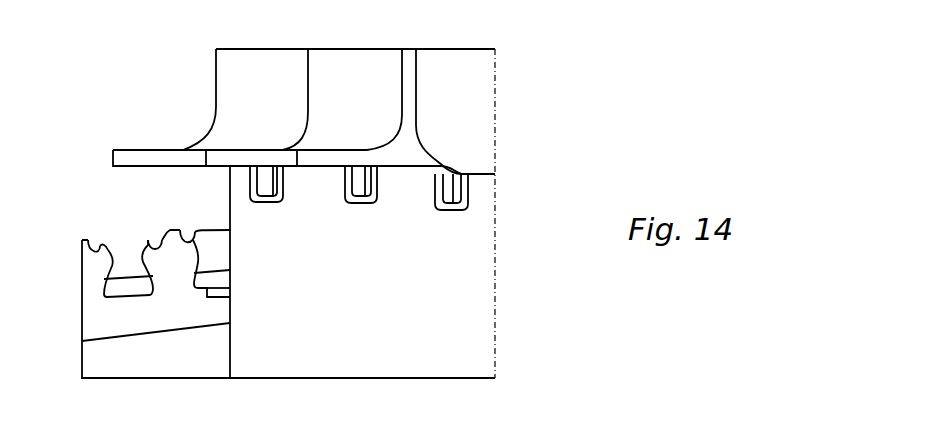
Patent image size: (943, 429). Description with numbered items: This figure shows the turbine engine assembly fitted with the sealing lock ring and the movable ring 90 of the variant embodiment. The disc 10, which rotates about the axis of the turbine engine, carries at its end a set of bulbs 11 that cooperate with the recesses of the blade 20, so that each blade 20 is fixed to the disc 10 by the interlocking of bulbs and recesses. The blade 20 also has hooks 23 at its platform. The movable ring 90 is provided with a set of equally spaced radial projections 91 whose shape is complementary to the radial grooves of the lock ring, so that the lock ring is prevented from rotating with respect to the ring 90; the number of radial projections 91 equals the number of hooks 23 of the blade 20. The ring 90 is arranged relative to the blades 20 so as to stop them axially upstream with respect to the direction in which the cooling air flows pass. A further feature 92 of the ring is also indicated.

The disc 10 is at (127, 321).
The bulbs 11 is at (168, 260).
The blade 20 is at (452, 113).
The hooks 23 is at (266, 180).
The movable ring 90 is at (457, 343).
The radial projections 91 is at (400, 187).
The hook 92 is at (450, 195).